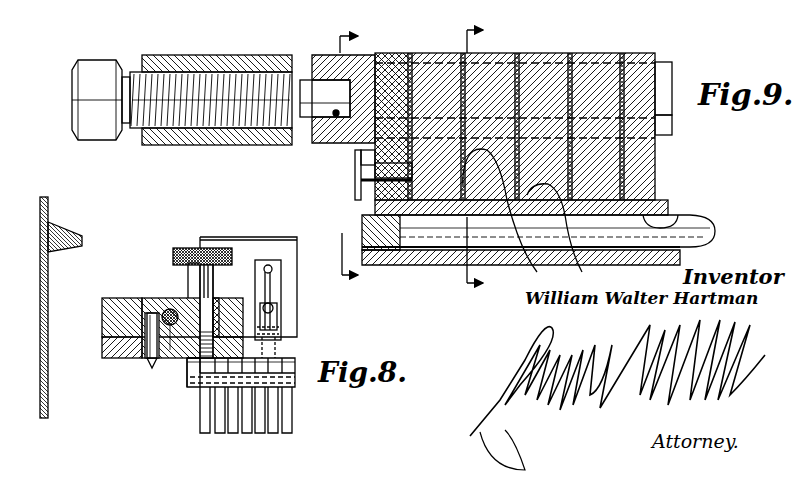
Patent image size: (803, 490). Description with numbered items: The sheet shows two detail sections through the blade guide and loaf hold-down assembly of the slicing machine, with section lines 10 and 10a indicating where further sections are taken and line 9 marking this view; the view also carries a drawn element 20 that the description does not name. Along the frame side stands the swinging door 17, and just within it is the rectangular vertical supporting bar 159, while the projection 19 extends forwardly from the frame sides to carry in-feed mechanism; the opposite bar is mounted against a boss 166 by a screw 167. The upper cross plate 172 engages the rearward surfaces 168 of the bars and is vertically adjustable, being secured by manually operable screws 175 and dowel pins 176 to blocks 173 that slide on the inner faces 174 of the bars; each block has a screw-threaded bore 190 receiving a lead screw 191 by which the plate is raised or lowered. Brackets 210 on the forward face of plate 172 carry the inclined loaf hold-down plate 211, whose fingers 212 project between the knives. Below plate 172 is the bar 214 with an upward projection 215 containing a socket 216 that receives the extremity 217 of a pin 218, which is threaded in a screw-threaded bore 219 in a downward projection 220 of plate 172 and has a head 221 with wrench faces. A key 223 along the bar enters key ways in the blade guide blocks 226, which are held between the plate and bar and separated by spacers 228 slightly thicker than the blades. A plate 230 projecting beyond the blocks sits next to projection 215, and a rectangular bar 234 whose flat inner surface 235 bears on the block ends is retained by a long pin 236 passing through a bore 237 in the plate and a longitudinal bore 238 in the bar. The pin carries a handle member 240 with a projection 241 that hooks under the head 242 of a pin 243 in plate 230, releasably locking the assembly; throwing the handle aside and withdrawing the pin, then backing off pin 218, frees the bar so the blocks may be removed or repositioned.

In FIG. 9, the section line 9 is at (504, 218).
In FIG. 9, the section line 10 is at (365, 156).
In FIG. 9, the section line 10a is at (496, 158).
In FIG. 8, the swinging door 17 is at (48, 322).
In FIG. 8, the projection 19 is at (48, 203).
In FIG. 9, the plate / bore 20 is at (566, 235).
In FIG. 8, the plate / bore 20 is at (284, 360).
In FIG. 8, the vertical supporting bar 159 is at (112, 310).
In FIG. 9, the boss 166 is at (726, 2).
In FIG. 9, the screw 167 is at (691, 12).
In FIG. 8, the rearward surface 168 is at (102, 354).
In FIG. 8, the upper cross plate 172 is at (122, 358).
In FIG. 8, the block 173 is at (165, 310).
In FIG. 8, the inner face 174 is at (142, 300).
In FIG. 8, the manually operable screw 175 is at (194, 250).
In FIG. 8, the dowel pin 176 is at (152, 366).
In FIG. 8, the screw-threaded bore 190 is at (172, 312).
In FIG. 8, the lead screw 191 is at (180, 368).
In FIG. 8, the bracket 210 is at (282, 302).
In FIG. 8, the loaf hold-down plate 211 is at (268, 247).
In FIG. 8, the finger 212 is at (233, 434).
In FIG. 9, the bar 214 is at (672, 72).
In FIG. 9, the upward projection 215 is at (340, 82).
In FIG. 9, the socket 216 is at (338, 118).
In FIG. 9, the pin extremity 217 is at (325, 108).
In FIG. 9, the pin 218 is at (172, 108).
In FIG. 9, the screw-threaded bore 219 is at (190, 75).
In FIG. 9, the downward projection 220 is at (272, 58).
In FIG. 9, the head 221 is at (100, 72).
In FIG. 9, the key 223 is at (672, 128).
In FIG. 9, the blade guide block 226 is at (443, 63).
In FIG. 9, the spacer 228 is at (600, 95).
In FIG. 9, the plate 230 is at (405, 63).
In FIG. 8, the plate 230 is at (197, 387).
In FIG. 9, the bar 234 is at (668, 215).
In FIG. 8, the bar 234 is at (288, 388).
In FIG. 9, the flat inner surface 235 is at (650, 200).
In FIG. 9, the long pin 236 is at (432, 262).
In FIG. 9, the bore 237 is at (405, 265).
In FIG. 9, the longitudinal bore 238 is at (660, 213).
In FIG. 9, the handle member 240 is at (357, 200).
In FIG. 9, the projection 241 is at (362, 196).
In FIG. 9, the head 242 is at (364, 190).
In FIG. 9, the pin 243 is at (366, 178).